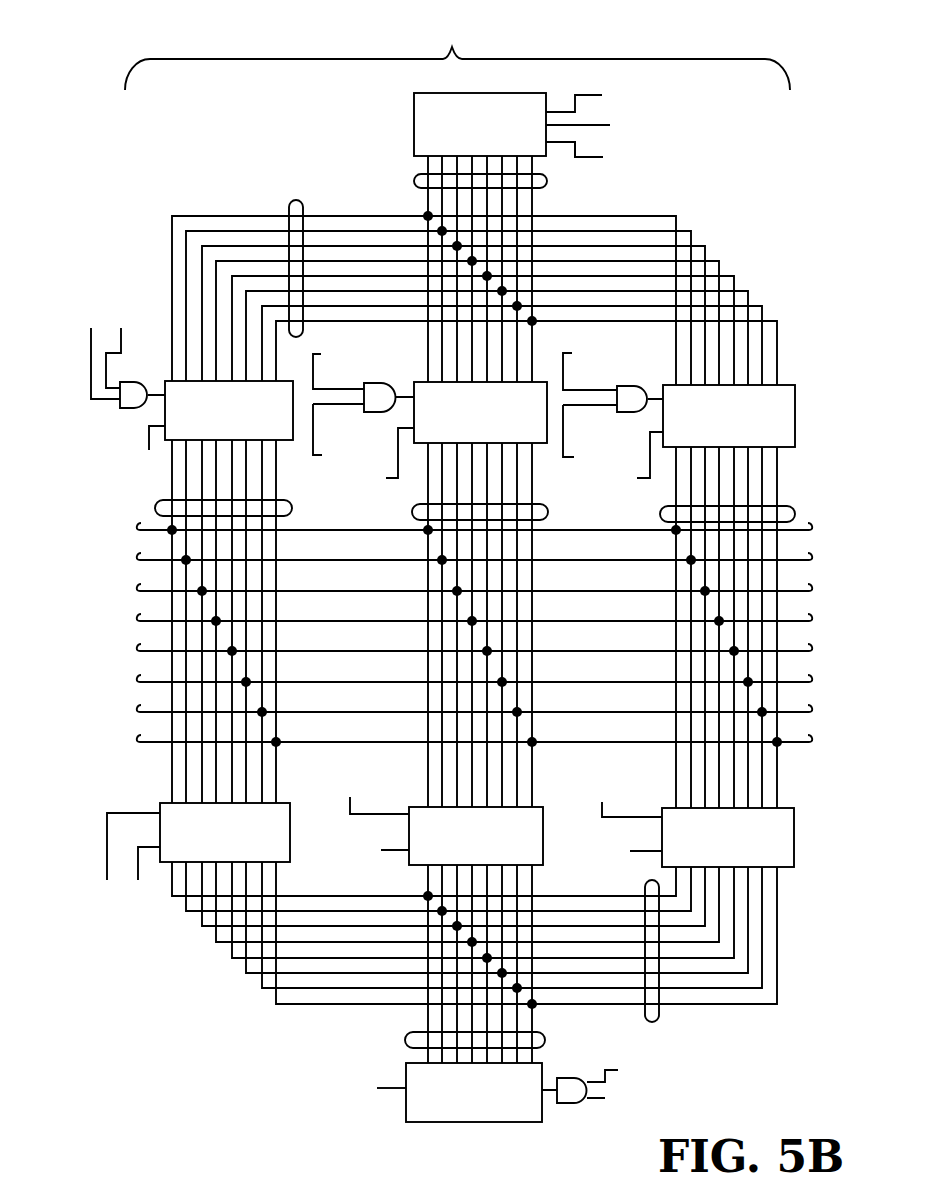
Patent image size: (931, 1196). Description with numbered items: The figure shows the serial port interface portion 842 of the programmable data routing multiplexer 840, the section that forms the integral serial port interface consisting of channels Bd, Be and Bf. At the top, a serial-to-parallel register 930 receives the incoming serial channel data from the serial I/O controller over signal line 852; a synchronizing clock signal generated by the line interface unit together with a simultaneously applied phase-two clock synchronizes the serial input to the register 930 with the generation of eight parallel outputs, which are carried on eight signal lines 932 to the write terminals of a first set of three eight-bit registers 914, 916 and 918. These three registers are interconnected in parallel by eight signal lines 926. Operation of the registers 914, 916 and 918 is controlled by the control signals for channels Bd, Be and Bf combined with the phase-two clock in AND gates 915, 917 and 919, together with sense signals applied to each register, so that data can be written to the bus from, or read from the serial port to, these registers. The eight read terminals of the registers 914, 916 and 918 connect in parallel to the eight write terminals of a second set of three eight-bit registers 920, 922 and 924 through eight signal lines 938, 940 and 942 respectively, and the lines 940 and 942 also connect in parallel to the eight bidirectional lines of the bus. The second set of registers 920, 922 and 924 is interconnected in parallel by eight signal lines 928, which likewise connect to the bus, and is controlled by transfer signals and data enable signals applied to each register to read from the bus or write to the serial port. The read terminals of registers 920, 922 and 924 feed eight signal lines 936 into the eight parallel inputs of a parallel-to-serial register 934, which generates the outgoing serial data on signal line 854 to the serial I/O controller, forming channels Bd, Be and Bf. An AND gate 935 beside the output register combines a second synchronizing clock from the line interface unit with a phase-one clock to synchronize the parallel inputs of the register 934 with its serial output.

The programmable data routing multiplexer 840 is at (763, 25).
The serial port interface portion 842 is at (457, 52).
The signal line 852 is at (597, 158).
The signal line 854 is at (392, 1087).
The eight-bit register 914 is at (206, 425).
The AND gate 915 is at (124, 381).
The eight-bit register 916 is at (457, 427).
The AND gate 917 is at (375, 412).
The eight-bit register 918 is at (706, 431).
The AND gate 919 is at (639, 412).
The eight-bit register 920 is at (202, 847).
The eight-bit register 922 is at (453, 851).
The eight-bit register 924 is at (705, 852).
The signal lines 926 is at (303, 180).
The signal lines 928 is at (652, 1022).
The serial-to-parallel register 930 is at (478, 137).
The signal lines 932 is at (412, 180).
The parallel-to-serial register 934 is at (451, 1107).
The AND gate 935 is at (563, 1103).
The signal lines 936 is at (545, 1040).
The signal lines 938 is at (155, 505).
The signal lines 940 is at (412, 512).
The signal lines 942 is at (660, 514).